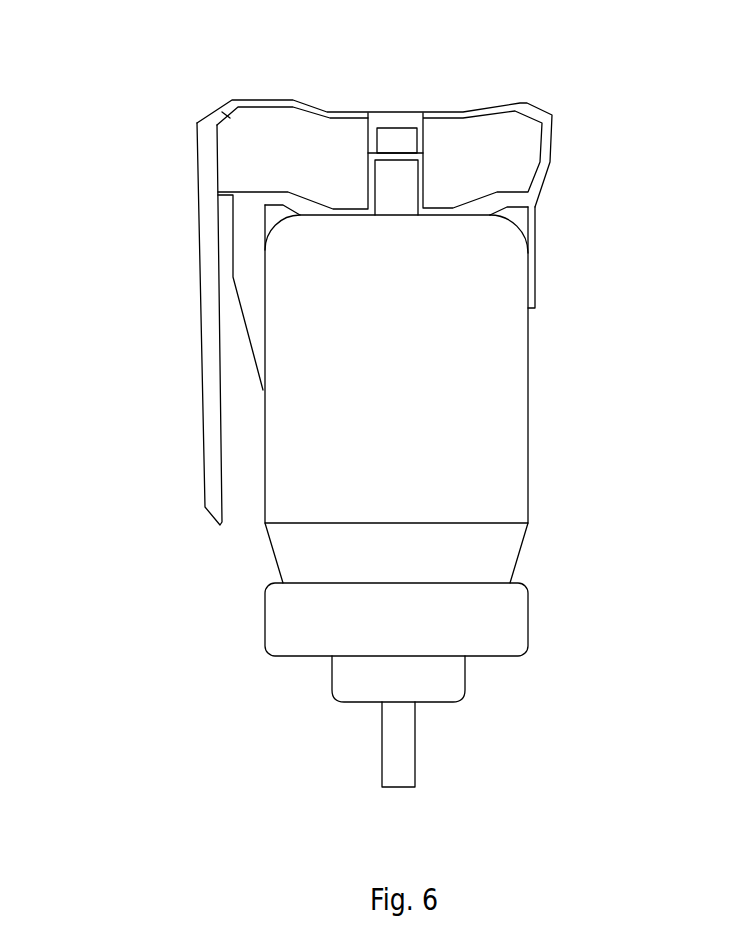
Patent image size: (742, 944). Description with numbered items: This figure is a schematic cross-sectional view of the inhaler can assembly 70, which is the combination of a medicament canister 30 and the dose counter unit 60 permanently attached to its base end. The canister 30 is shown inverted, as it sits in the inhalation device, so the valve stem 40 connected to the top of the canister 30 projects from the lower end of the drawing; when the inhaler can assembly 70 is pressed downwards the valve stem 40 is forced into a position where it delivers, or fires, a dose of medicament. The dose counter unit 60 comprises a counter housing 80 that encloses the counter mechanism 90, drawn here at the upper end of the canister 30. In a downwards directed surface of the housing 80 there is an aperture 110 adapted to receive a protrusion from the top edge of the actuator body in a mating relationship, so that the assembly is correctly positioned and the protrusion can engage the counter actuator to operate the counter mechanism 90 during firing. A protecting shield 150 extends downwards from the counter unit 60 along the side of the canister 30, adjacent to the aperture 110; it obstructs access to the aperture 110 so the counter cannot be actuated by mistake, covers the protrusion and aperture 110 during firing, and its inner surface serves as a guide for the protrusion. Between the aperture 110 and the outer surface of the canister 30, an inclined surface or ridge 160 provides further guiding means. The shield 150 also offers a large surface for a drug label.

The canister 30 is at (467, 256).
The valve stem 40 is at (398, 738).
The dose counter unit 60 is at (272, 98).
The inhaler can assembly 70 is at (632, 118).
The counter housing 80 is at (525, 205).
The counter mechanism 90 is at (333, 138).
The aperture 110 is at (222, 190).
The protecting shield 150 is at (207, 223).
The inclined surface or ridge 160 is at (243, 270).